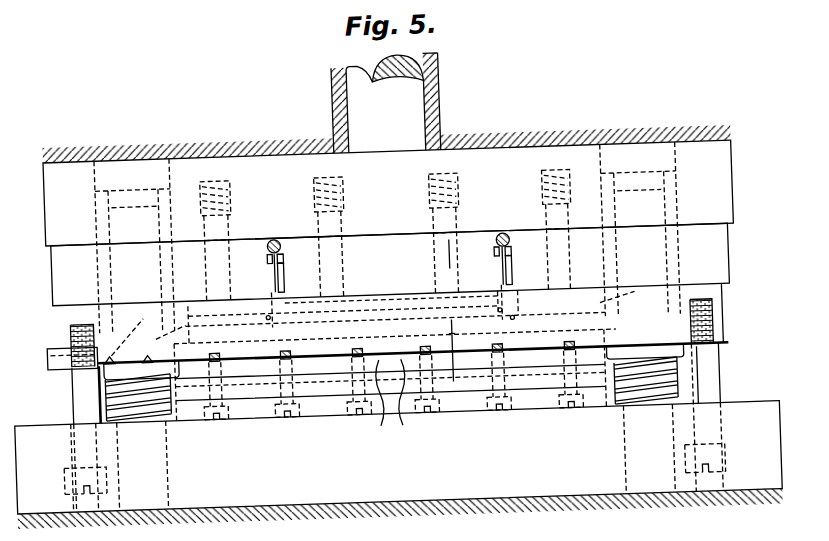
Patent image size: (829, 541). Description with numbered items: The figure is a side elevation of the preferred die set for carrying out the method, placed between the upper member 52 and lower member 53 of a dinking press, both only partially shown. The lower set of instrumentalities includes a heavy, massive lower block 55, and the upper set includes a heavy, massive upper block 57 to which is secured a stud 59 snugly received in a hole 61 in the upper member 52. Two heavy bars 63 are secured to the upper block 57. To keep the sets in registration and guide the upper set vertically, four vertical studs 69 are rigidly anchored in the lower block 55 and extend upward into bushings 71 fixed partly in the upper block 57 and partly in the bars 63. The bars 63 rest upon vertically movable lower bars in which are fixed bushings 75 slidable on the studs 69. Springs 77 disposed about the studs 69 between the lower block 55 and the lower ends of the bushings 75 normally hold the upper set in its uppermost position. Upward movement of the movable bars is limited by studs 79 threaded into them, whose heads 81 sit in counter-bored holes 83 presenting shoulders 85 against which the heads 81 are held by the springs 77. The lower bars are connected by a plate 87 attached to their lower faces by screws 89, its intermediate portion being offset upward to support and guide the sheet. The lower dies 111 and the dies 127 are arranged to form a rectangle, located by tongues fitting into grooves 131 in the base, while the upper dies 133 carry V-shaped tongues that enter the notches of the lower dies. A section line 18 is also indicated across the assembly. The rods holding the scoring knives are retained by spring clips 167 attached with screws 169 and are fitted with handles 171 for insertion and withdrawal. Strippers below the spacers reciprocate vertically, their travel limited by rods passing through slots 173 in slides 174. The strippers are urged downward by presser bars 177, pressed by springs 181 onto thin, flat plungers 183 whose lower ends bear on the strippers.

The pin 18 is at (440, 263).
The upper member 52 is at (500, 165).
The lower member 53 is at (488, 525).
The lower block 55 is at (745, 429).
The upper block 57 is at (43, 205).
The stud 59 is at (411, 124).
The hole 61 is at (442, 109).
The bars 63 is at (48, 270).
The vertical studs 69 is at (394, 385).
The bushings 71 is at (99, 214).
The bushings 75 is at (165, 376).
The springs 77 is at (139, 418).
The studs 79 is at (67, 399).
The heads 81 is at (59, 486).
The counter-bored holes 83 is at (51, 503).
The shoulders 85 is at (58, 469).
The plate 87 is at (52, 350).
The screws 89 is at (141, 362).
The dies 111 is at (390, 389).
The dies 127 is at (236, 372).
The grooves 131 is at (290, 393).
The dies 133 is at (150, 343).
The spring clips 167 is at (261, 274).
The screws 169 is at (263, 255).
The handles 171 is at (278, 293).
The slots 173 is at (370, 326).
The slides 174 is at (261, 324).
The presser bars 177 is at (226, 235).
The springs 181 is at (229, 201).
The plungers 183 is at (436, 275).